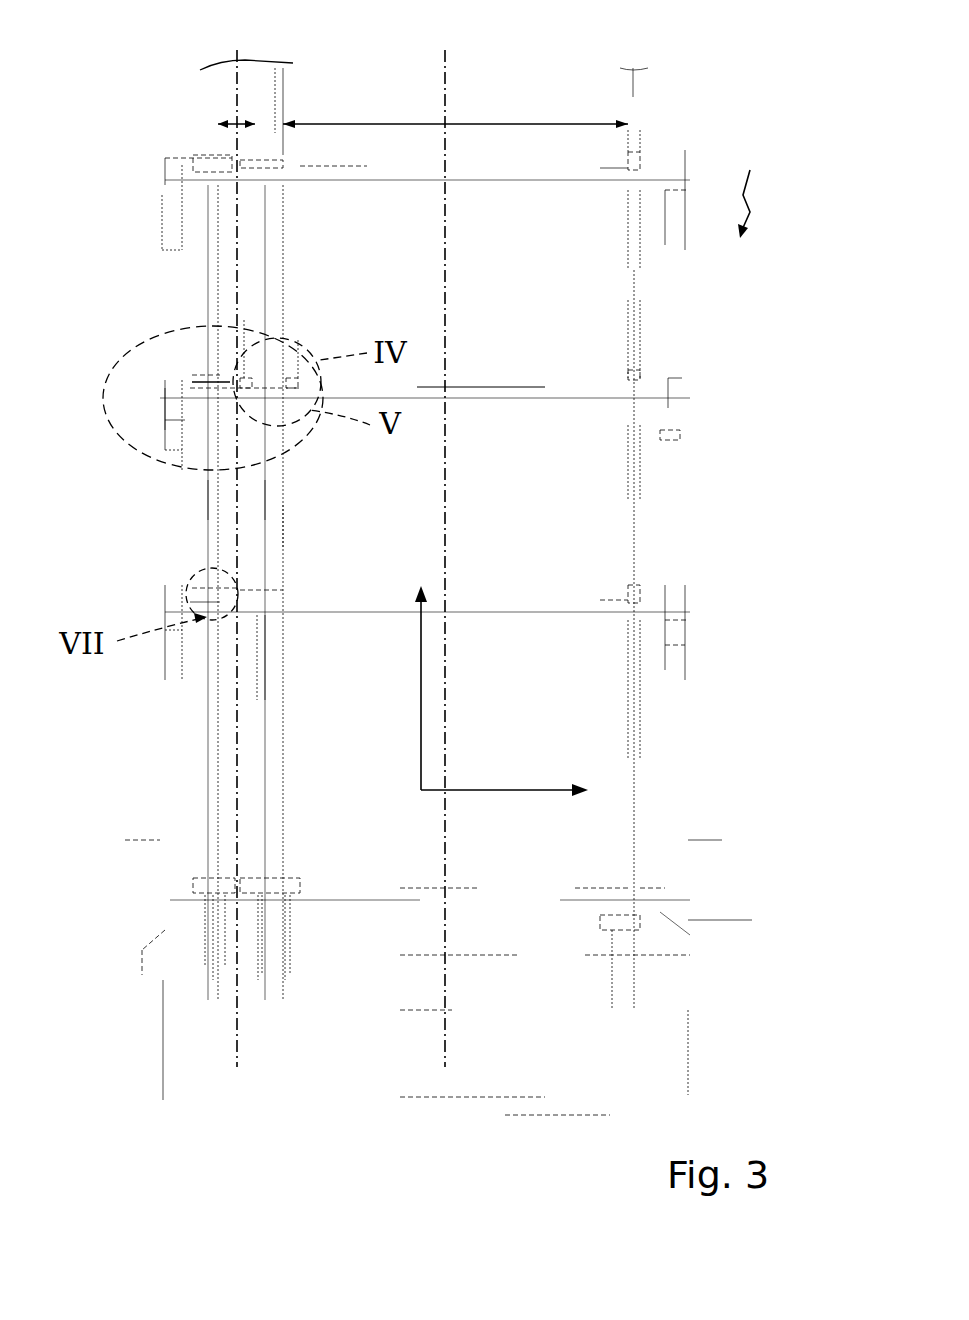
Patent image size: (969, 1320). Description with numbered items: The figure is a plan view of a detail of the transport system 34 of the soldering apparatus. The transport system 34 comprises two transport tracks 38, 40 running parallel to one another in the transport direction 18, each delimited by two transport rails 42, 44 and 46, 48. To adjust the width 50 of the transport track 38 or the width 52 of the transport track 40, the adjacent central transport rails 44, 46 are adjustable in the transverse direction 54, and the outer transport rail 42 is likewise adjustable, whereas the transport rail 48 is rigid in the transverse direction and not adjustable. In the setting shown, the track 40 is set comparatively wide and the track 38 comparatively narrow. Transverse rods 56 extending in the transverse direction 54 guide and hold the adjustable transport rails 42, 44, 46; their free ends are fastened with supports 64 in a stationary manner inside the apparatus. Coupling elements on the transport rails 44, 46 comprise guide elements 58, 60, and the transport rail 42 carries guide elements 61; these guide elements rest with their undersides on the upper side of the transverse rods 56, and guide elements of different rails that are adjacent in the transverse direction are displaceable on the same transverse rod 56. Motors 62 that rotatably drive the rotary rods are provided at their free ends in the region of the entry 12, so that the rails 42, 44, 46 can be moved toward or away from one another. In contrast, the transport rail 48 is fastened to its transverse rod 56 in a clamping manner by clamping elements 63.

The entry 12 is at (408, 1085).
The transport direction 18 is at (421, 680).
The transport system 34 is at (751, 190).
The transport track 38 is at (243, 55).
The transport track 40 is at (448, 58).
The transport rail 42 is at (207, 488).
The transport rail 44 is at (265, 543).
The transport rail 46 is at (283, 637).
The transport rail 48 is at (628, 660).
The width 50 is at (236, 122).
The width 52 is at (365, 122).
The transverse direction 54 is at (510, 788).
The transverse rods 56 is at (476, 393).
The guide element 58 is at (247, 377).
The guide element 60 is at (290, 377).
The guide element 61 is at (200, 377).
The motors 62 is at (213, 980).
The clamping elements 63 is at (632, 387).
The supports 64 is at (165, 421).